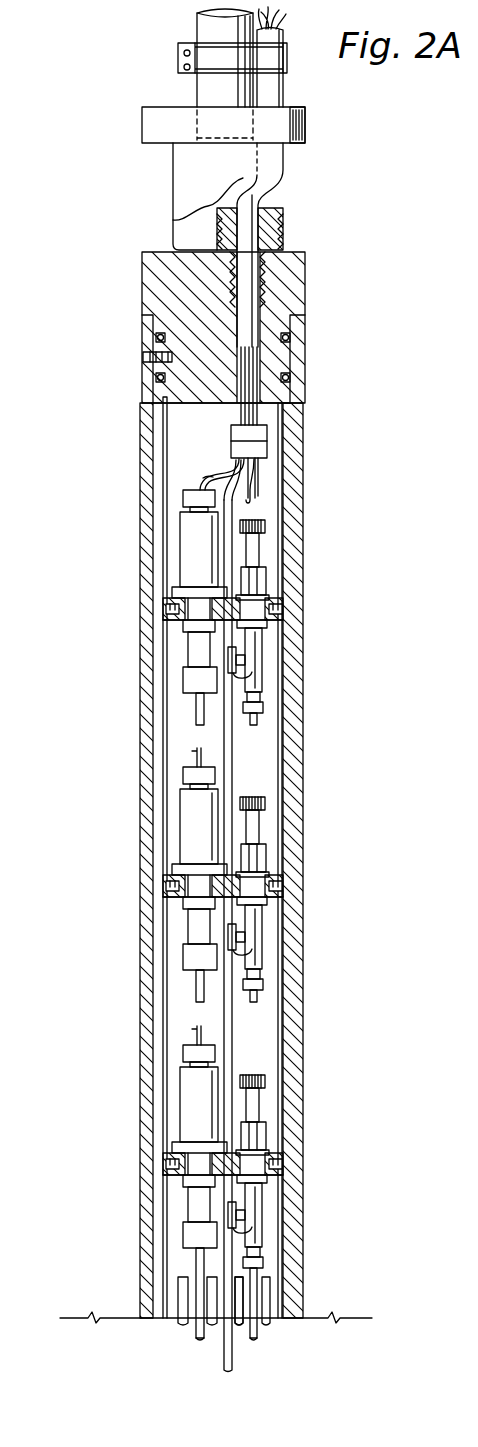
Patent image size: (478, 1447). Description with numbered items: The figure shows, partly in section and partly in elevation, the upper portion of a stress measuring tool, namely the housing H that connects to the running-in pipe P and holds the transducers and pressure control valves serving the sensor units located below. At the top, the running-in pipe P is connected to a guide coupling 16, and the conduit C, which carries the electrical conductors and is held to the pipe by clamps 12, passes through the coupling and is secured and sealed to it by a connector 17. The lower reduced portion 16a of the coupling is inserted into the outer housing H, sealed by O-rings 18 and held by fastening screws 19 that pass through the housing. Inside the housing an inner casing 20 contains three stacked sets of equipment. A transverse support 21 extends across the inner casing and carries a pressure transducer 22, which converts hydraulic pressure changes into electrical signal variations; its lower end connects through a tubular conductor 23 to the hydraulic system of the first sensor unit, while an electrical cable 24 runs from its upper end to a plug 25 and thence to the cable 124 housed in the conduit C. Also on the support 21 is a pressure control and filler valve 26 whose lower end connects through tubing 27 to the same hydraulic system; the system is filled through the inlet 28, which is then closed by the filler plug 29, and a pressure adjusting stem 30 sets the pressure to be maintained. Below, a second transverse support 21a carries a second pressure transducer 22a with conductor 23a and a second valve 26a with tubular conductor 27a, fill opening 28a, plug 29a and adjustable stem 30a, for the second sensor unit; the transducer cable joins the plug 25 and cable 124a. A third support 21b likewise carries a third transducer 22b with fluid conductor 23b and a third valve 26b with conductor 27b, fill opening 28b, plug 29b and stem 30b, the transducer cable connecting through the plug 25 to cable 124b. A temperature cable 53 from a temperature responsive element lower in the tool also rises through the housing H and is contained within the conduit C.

The running-in pipe P is at (197, 25).
The conduit C is at (286, 90).
The clamps 12 is at (178, 57).
The guide coupling 16 is at (183, 166).
The lower reduced portion 16a is at (162, 397).
The connector 17 is at (283, 218).
The housing H is at (305, 362).
The O-rings 18 is at (292, 338).
The fastening screws 19 is at (148, 357).
The inner casing 20 is at (163, 465).
The cable 124 is at (236, 413).
The cable 124a is at (252, 393).
The cable 124b is at (267, 418).
The plug 25 is at (268, 448).
The electrical cable 24 is at (203, 480).
The temperature cable 53 is at (234, 510).
The pressure transducer 22 is at (183, 542).
The second pressure transducer 22a is at (142, 821).
The third pressure transducer 22b is at (142, 1099).
The transverse support 21 is at (283, 601).
The transverse support 21a is at (167, 898).
The transverse support 21b is at (167, 1176).
The tubular conductor 23 is at (195, 712).
The conductor 23a is at (137, 1126).
The fluid conductor 23b is at (137, 1257).
The pressure adjusting stem 30 is at (262, 548).
The adjustable stem 30a is at (309, 837).
The pressure adjusting stem 30b is at (309, 1115).
The pressure control and filler valve 26 is at (258, 636).
The second pressure control and filler valve 26a is at (308, 932).
The third pressure control and filler valve 26b is at (308, 1209).
The inlet 28 is at (246, 656).
The fill opening 28a is at (304, 934).
The fill opening 28b is at (304, 1212).
The filler plug 29 is at (236, 672).
The plug 29a is at (306, 956).
The plug 29b is at (306, 1231).
The tubing 27 is at (258, 725).
The tubular conductor 27a is at (307, 1162).
The conductor 27b is at (311, 1293).